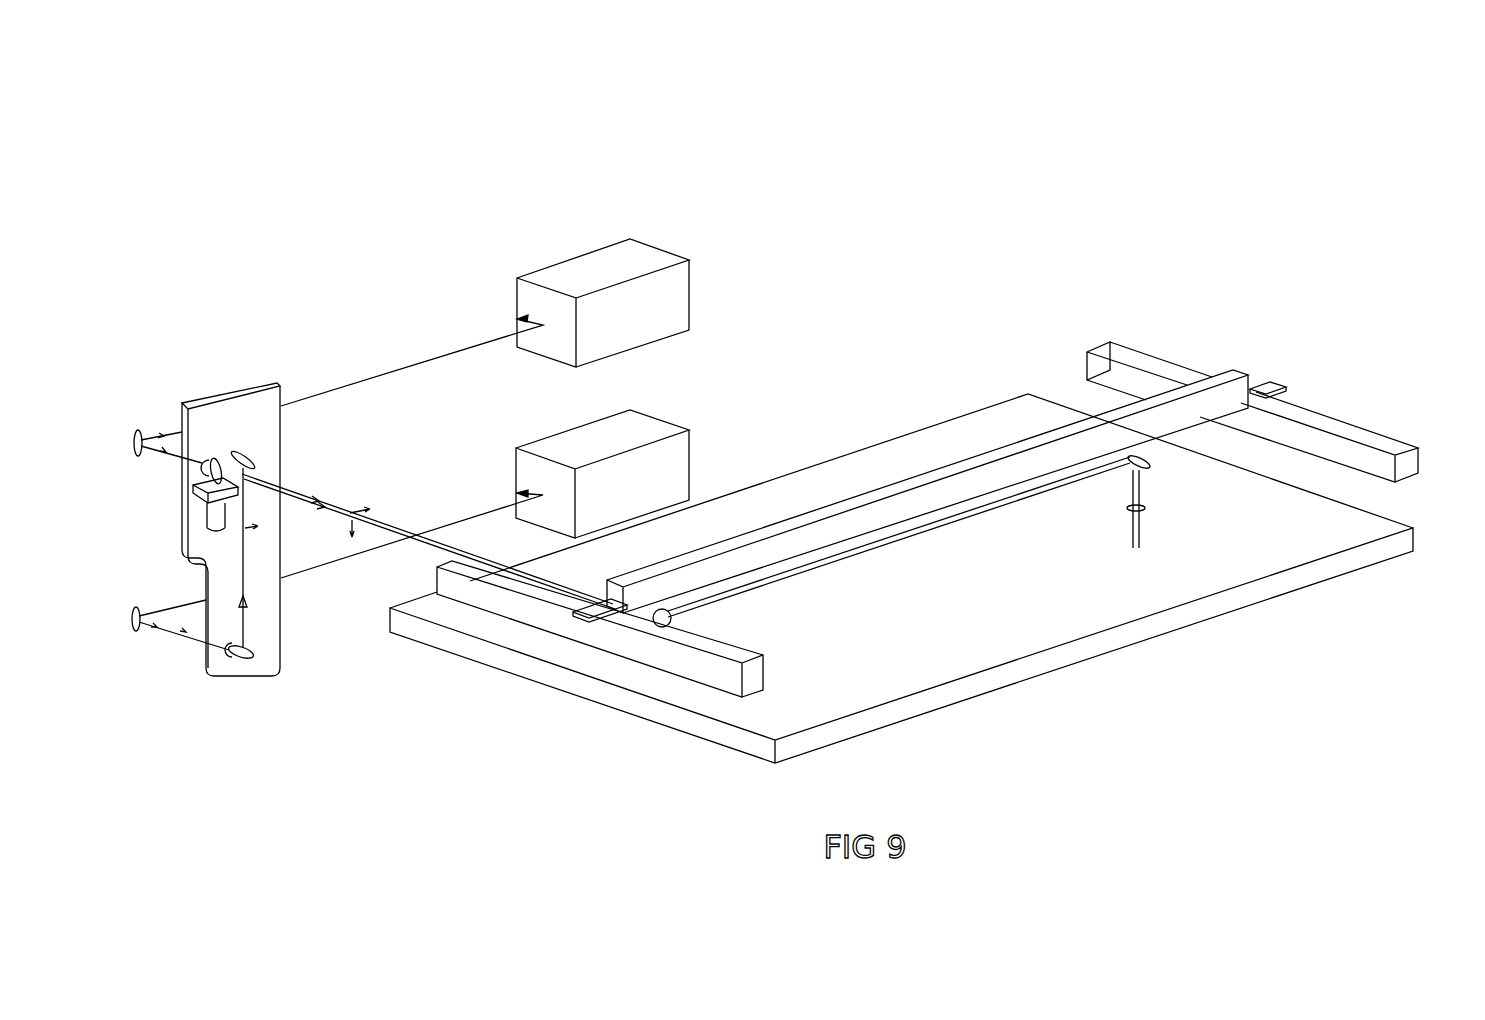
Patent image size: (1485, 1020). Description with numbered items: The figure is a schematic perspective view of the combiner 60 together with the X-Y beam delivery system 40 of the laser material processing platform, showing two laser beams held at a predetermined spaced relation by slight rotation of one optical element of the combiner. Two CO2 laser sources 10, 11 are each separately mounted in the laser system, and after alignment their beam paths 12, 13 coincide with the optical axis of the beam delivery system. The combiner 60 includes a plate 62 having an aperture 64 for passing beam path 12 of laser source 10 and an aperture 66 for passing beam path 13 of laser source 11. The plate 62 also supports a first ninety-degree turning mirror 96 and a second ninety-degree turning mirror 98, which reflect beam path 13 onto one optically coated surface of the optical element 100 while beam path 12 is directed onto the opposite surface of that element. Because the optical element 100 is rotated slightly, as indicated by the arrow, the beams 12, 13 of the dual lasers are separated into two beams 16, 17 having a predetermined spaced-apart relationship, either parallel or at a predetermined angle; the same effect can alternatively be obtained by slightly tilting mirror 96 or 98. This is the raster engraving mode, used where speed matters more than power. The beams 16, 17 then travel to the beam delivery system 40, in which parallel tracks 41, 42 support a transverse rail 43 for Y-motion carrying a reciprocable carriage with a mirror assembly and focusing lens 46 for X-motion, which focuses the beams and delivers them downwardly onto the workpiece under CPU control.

The CO2 laser source 10 is at (583, 277).
The CO2 laser source 11 is at (643, 460).
The beam path 12 is at (360, 378).
The beam path 13 is at (463, 520).
The separated beam 16 is at (412, 540).
The separated beam 17 is at (432, 545).
The X-Y beam delivery system 40 is at (1140, 221).
The parallel track 41 is at (673, 657).
The parallel track 42 is at (1282, 432).
The transverse rail 43 is at (978, 477).
The focusing lens 46 is at (1145, 508).
The combiner 60 is at (279, 347).
The plate 62 is at (282, 473).
The aperture 64 is at (203, 462).
The aperture 66 is at (230, 647).
The first 90° turning mirror 96 is at (240, 660).
The second 90° turning mirror 98 is at (243, 452).
The optical element 100 is at (216, 457).